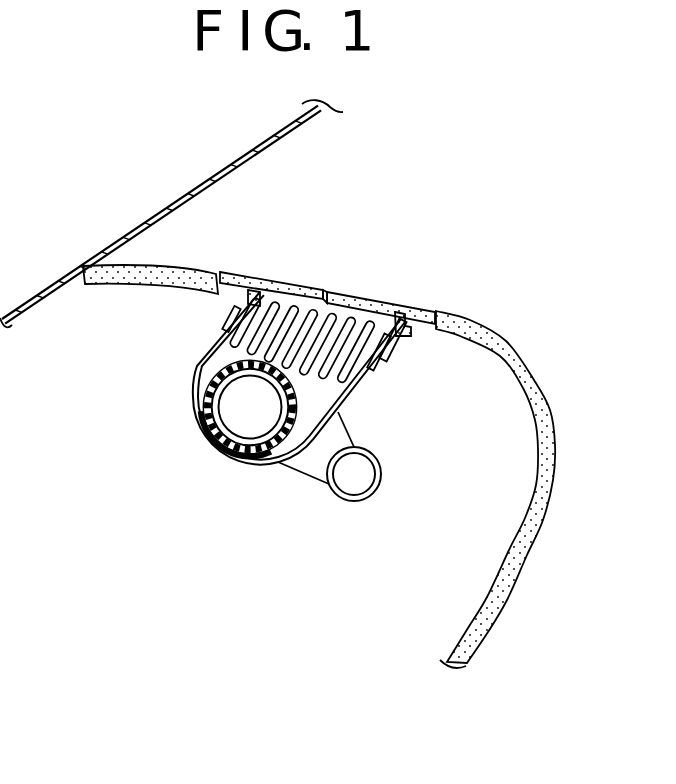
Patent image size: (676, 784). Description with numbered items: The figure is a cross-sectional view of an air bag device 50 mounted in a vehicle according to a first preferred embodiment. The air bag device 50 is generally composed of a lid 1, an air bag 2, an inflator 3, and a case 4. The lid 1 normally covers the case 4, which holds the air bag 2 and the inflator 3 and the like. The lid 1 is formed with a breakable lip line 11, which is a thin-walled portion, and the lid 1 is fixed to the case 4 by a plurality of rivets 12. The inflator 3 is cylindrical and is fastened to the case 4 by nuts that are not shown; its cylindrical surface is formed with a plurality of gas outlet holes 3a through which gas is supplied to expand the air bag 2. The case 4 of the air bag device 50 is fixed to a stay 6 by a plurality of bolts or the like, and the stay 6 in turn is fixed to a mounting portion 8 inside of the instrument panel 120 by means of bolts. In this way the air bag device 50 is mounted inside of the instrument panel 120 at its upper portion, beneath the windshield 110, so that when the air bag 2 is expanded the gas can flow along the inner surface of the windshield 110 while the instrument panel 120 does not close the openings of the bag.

The lid 1 is at (387, 292).
The air bag 2 is at (295, 307).
The inflator 3 is at (243, 420).
The gas outlet holes 3a is at (236, 353).
The case 4 is at (207, 362).
The stay 6 is at (357, 420).
The mounting portion 8 is at (363, 503).
The breakable lip line 11 is at (328, 292).
The rivets 12 is at (418, 345).
The air bag device 50 is at (161, 442).
The windshield 110 is at (213, 176).
The instrument panel 120 is at (500, 603).